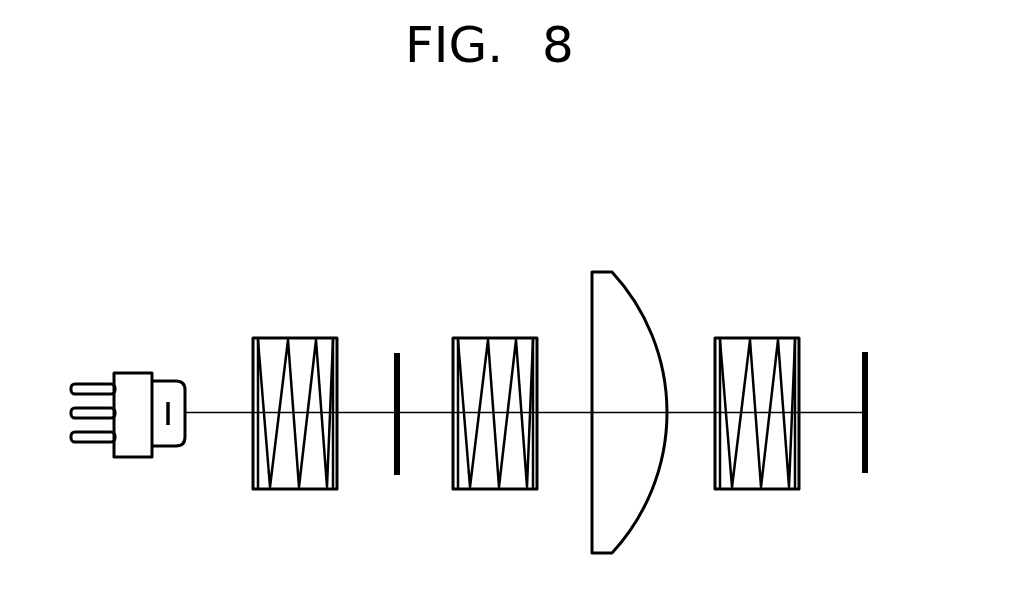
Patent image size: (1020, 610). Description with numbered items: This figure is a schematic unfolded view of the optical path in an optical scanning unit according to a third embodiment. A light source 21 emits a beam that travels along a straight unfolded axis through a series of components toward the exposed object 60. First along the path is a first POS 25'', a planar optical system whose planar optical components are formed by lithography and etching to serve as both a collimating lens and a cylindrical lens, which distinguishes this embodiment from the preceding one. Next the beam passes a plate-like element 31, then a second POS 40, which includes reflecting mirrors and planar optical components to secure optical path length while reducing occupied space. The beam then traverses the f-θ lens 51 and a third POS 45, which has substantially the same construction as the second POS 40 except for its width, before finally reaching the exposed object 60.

The light source 21 is at (133, 372).
The first POS 25'' is at (295, 359).
The aperture/filter plate 31 is at (397, 352).
The second POS 40 is at (498, 337).
The f-θ lens 51 is at (603, 271).
The third POS 45 is at (759, 337).
The exposed object 60 is at (864, 352).